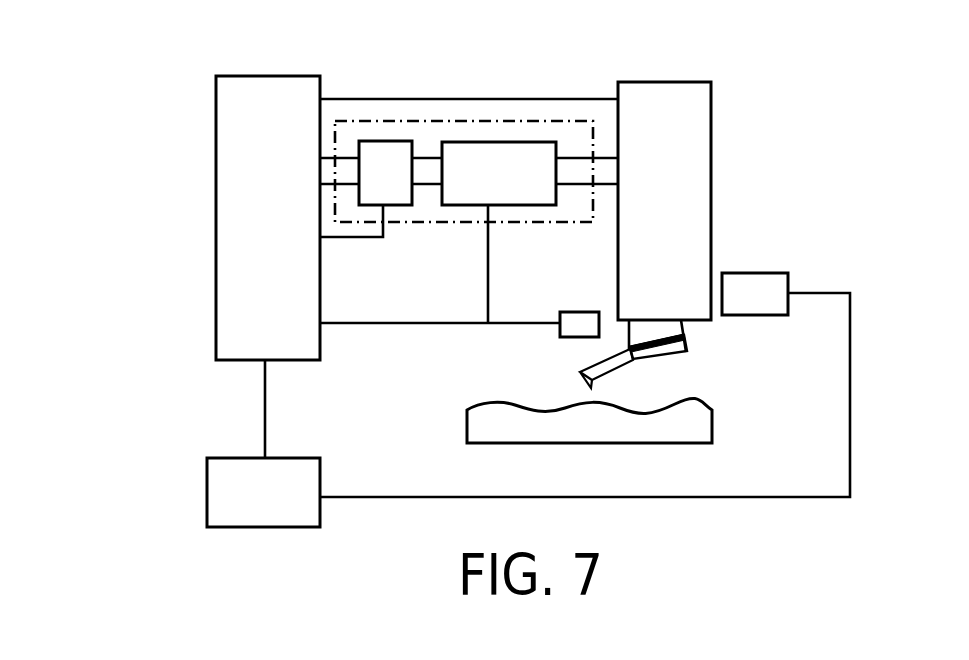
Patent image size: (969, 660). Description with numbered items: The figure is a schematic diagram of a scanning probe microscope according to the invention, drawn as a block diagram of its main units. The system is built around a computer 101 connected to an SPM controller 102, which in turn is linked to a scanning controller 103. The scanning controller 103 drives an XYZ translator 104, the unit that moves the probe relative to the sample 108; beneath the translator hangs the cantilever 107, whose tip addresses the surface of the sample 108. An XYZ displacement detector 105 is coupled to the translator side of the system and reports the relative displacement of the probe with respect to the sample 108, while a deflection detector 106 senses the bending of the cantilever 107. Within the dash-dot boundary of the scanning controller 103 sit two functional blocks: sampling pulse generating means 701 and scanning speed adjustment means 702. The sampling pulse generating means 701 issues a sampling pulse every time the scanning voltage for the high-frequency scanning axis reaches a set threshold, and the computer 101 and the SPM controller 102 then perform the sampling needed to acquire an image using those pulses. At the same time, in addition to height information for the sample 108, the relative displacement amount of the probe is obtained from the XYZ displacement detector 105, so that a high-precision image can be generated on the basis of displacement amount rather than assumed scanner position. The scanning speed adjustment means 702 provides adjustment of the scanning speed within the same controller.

The computer 101 is at (207, 491).
The SPM controller 102 is at (216, 204).
The scanning controller 103 is at (553, 121).
The XYZ translator 104 is at (713, 142).
The XYZ displacement detector 105 is at (735, 272).
The deflection detector 106 is at (563, 298).
The cantilever 107 is at (690, 347).
The sample 108 is at (466, 435).
The sampling pulse generating means 701 is at (377, 141).
The scanning speed adjustment means 702 is at (478, 142).